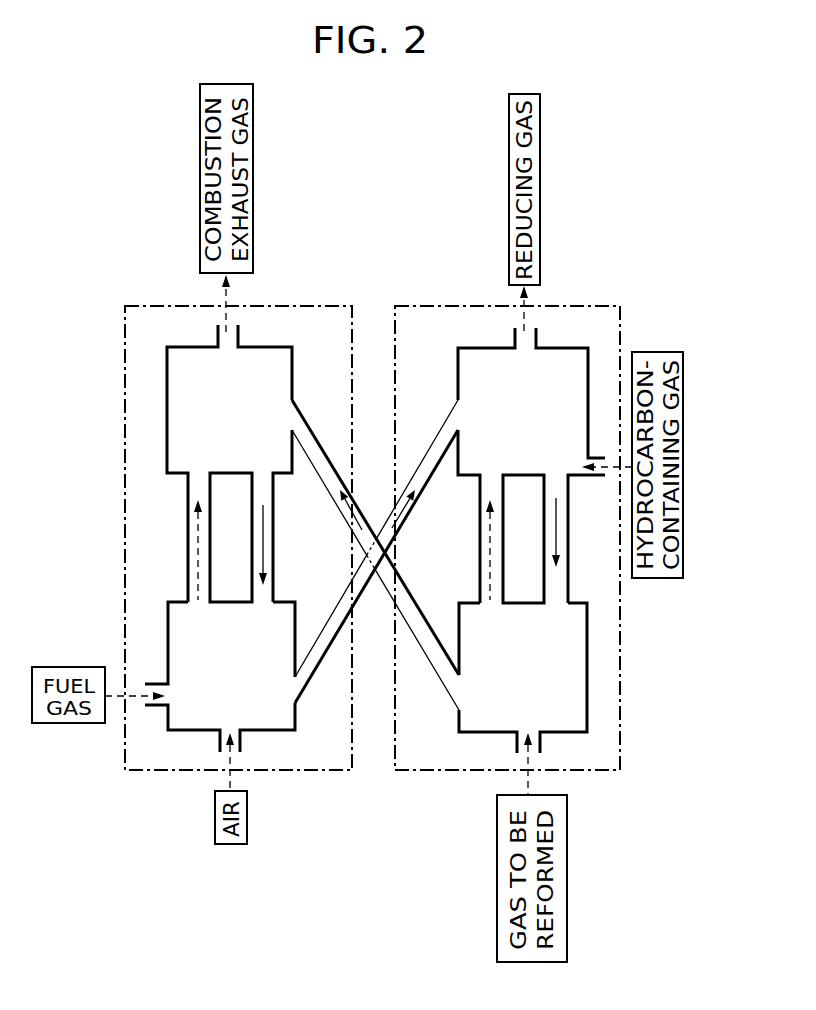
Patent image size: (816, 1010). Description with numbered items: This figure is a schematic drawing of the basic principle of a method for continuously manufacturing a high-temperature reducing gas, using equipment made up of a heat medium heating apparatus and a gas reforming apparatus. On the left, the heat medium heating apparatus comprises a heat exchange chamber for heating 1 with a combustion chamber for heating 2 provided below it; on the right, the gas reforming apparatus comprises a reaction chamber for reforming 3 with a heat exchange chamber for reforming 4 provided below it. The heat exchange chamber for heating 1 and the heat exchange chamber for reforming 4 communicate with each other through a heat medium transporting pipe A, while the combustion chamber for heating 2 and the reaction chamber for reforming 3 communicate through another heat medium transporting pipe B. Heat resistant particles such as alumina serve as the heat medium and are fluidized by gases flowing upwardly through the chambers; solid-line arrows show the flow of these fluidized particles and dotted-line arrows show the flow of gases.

The heat exchange chamber for heating 1 is at (170, 410).
The combustion chamber for heating 2 is at (188, 722).
The reaction chamber for reforming 3 is at (560, 359).
The heat exchange chamber for reforming 4 is at (569, 619).
The heat medium transporting pipe A is at (413, 596).
The heat medium transporting pipe B is at (339, 603).